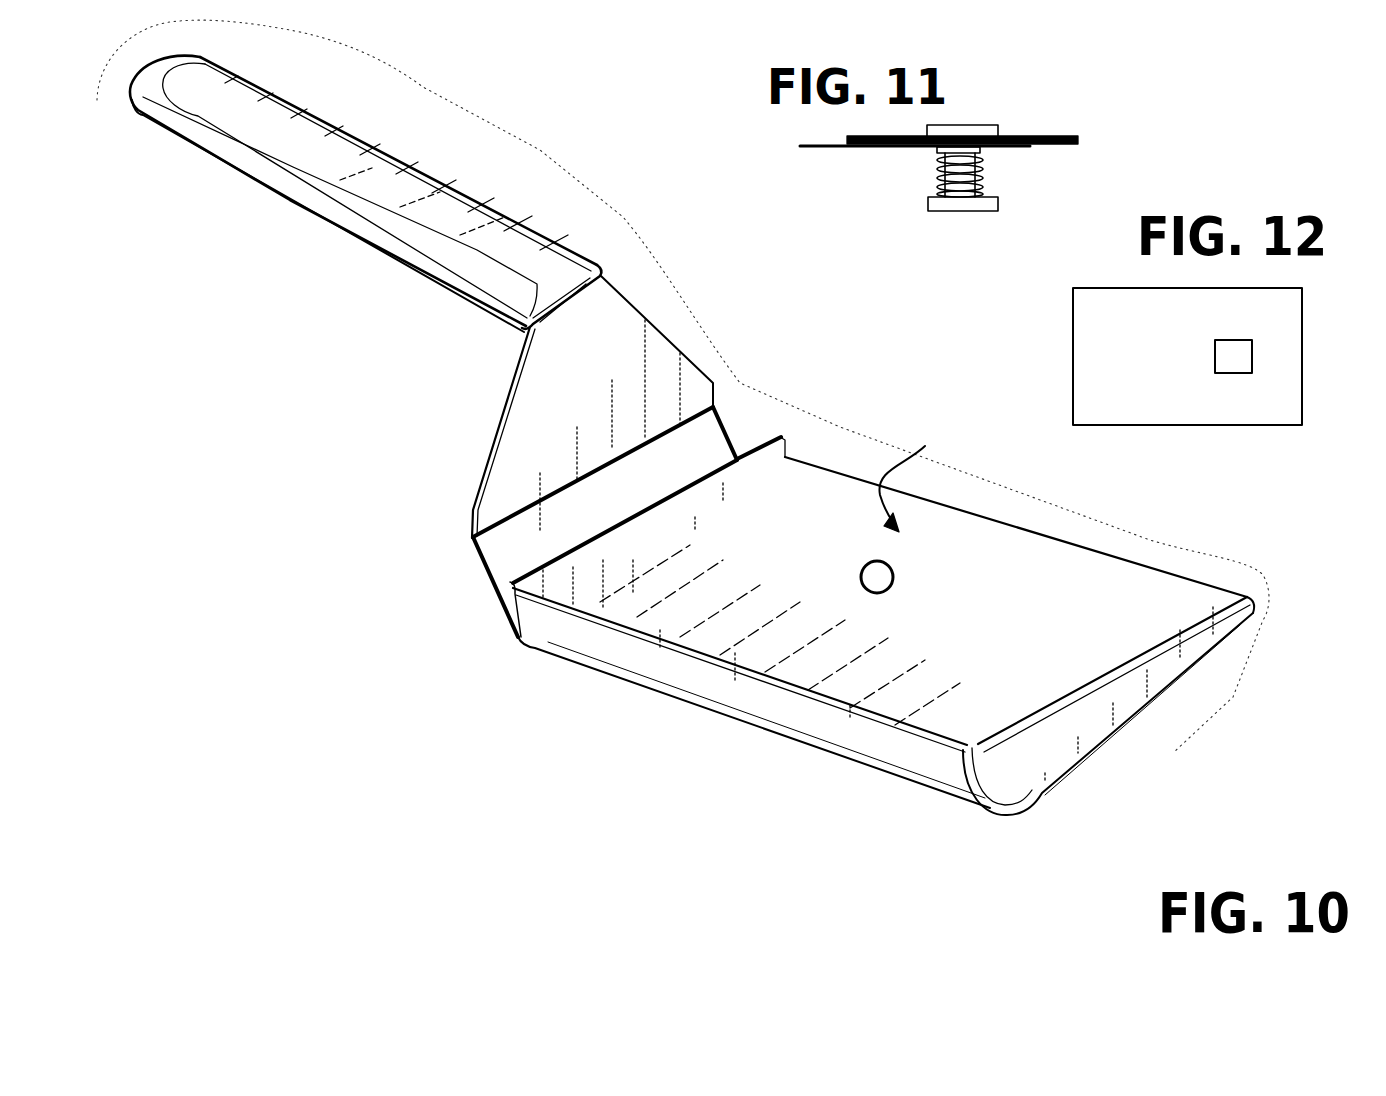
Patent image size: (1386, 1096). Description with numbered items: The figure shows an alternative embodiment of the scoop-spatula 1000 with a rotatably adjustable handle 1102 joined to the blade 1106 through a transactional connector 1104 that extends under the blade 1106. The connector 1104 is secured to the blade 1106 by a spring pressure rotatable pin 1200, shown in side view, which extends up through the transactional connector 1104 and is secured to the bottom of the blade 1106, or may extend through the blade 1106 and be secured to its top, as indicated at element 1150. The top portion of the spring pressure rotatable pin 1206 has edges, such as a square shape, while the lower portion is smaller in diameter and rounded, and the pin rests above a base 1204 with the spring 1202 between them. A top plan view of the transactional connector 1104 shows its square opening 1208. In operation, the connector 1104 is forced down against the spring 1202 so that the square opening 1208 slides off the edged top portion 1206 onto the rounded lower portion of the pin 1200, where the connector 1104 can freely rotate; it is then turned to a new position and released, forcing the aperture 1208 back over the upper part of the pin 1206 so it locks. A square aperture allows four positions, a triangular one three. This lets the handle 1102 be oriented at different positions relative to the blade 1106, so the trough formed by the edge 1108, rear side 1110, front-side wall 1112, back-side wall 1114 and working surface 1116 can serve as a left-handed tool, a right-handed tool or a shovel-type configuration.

In FIG. 10, the serving utensil 1000 is at (812, 388).
In FIG. 10, the rotatably adjustable handle 1102 is at (306, 214).
In FIG. 10, the transactional connector 1104 is at (527, 430).
In FIG. 11, the transactional connector 1104 is at (800, 145).
In FIG. 12, the transactional connector 1104 is at (1108, 333).
In FIG. 10, the blade 1106 is at (882, 617).
In FIG. 11, the blade 1106 is at (1078, 140).
In FIG. 10, the edge 1108 is at (1083, 566).
In FIG. 10, the rear side 1110 is at (710, 687).
In FIG. 10, the front-side wall 1112 is at (1097, 730).
In FIG. 10, the back-side wall 1114 is at (510, 611).
In FIG. 10, the working surface 1116 is at (929, 476).
In FIG. 10, the pin securement on top of blade 1150 is at (894, 574).
In FIG. 11, the pin securement on top of blade 1150 is at (987, 124).
In FIG. 11, the spring pressure rotatable pin 1200 is at (1136, 79).
In FIG. 11, the spring 1202 is at (984, 180).
In FIG. 11, the base plate 1204 is at (928, 203).
In FIG. 11, the top portion of the spring pressure rotatable pin 1206 is at (940, 150).
In FIG. 12, the square opening 1208 is at (1252, 357).